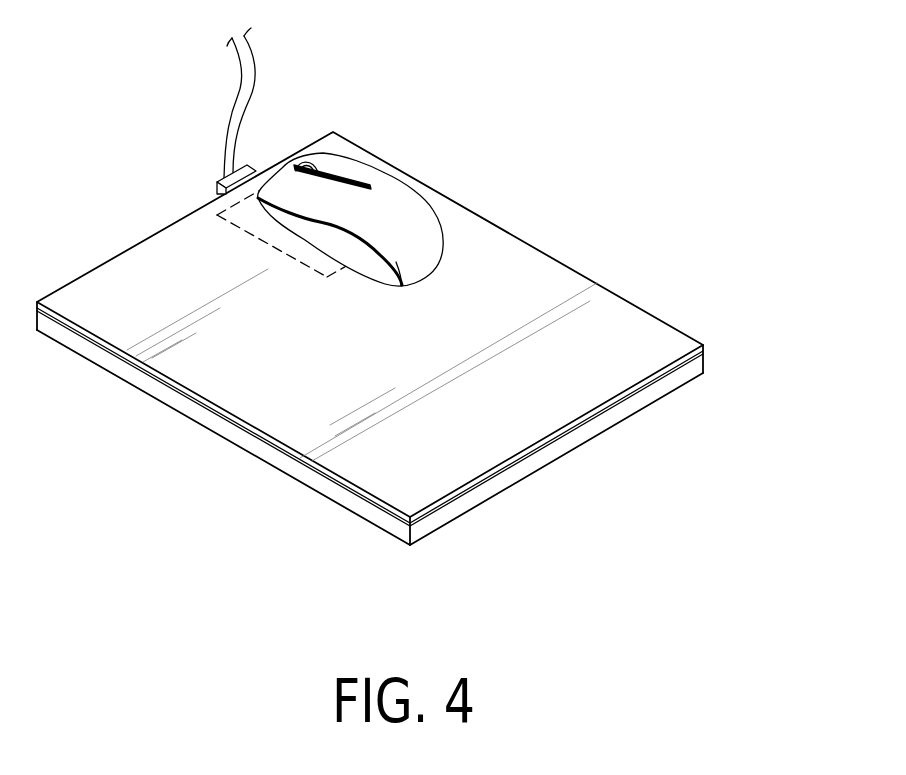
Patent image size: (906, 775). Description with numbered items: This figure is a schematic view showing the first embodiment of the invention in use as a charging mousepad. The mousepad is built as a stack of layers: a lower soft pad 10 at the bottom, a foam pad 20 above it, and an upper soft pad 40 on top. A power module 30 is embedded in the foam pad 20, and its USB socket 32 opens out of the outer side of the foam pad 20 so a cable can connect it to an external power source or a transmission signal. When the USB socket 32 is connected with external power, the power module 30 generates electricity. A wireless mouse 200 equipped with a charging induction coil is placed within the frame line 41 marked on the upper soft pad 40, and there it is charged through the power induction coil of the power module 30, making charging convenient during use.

The lower soft pad 10 is at (560, 475).
The foam pad 20 is at (722, 340).
The power module 30 is at (198, 185).
The USB socket 32 is at (223, 174).
The upper soft pad 40 is at (623, 295).
The frame line 41 is at (255, 236).
The wireless mouse 200 is at (364, 148).